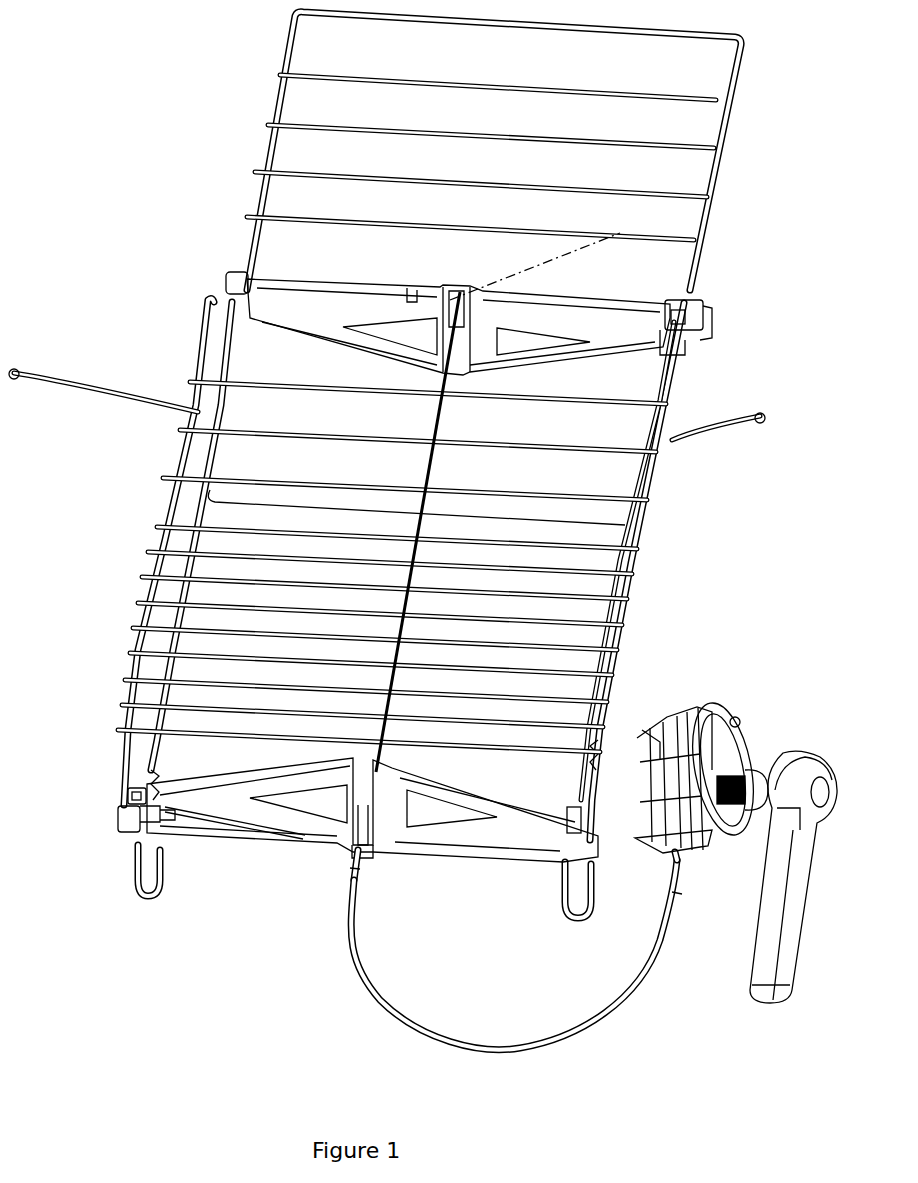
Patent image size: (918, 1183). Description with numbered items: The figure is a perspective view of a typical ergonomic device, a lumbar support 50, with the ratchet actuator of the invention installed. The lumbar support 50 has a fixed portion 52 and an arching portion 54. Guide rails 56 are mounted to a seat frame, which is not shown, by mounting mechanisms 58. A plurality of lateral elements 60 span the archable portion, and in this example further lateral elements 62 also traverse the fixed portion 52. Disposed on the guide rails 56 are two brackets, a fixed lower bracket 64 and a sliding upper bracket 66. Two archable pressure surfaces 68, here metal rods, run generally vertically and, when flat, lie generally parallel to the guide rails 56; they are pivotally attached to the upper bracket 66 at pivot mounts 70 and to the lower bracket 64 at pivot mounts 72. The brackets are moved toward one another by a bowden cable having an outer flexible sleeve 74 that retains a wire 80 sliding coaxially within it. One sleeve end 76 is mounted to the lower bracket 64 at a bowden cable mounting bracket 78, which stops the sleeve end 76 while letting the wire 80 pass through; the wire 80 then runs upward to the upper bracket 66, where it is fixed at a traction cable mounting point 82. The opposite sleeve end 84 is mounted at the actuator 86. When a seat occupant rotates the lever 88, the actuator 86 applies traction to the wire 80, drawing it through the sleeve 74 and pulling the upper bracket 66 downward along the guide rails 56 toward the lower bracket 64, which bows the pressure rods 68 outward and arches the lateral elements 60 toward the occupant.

The lumbar support 50 is at (135, 272).
The fixed portion 52 is at (232, 124).
The arching portion 54 is at (103, 525).
The guide rails 56 is at (723, 132).
The mounting mechanisms 58 is at (725, 410).
The lateral elements 60 is at (572, 603).
The lateral elements 62 is at (687, 95).
The fixed lower bracket 64 is at (230, 798).
The sliding upper bracket 66 is at (697, 287).
The archable pressure surfaces 68 is at (150, 562).
The pivot mounts 70 is at (705, 332).
The pivot mounts 72 is at (127, 803).
The bowden cable sleeve 74 is at (372, 990).
The bowden cable sleeve end 76 is at (365, 862).
The bowden cable mounting bracket 78 is at (335, 845).
The bowden cable wire 80 is at (437, 470).
The traction cable mounting point 82 is at (620, 233).
The bowden cable sleeve end 84 is at (665, 865).
The actuator 86 is at (790, 693).
The lever 88 is at (797, 906).